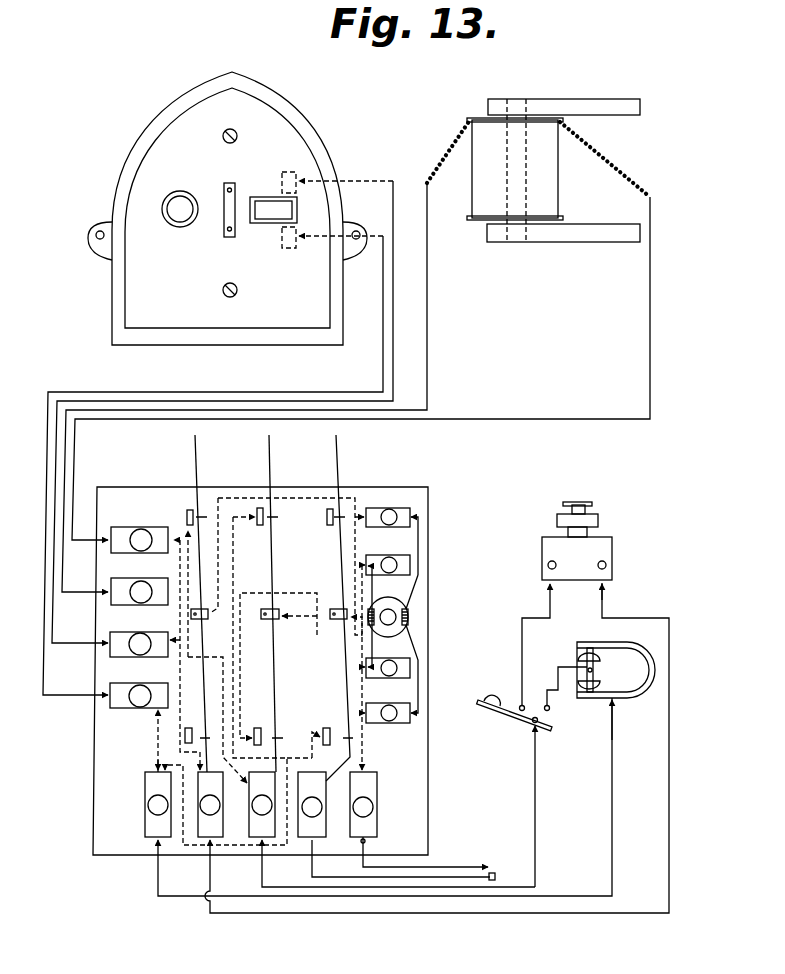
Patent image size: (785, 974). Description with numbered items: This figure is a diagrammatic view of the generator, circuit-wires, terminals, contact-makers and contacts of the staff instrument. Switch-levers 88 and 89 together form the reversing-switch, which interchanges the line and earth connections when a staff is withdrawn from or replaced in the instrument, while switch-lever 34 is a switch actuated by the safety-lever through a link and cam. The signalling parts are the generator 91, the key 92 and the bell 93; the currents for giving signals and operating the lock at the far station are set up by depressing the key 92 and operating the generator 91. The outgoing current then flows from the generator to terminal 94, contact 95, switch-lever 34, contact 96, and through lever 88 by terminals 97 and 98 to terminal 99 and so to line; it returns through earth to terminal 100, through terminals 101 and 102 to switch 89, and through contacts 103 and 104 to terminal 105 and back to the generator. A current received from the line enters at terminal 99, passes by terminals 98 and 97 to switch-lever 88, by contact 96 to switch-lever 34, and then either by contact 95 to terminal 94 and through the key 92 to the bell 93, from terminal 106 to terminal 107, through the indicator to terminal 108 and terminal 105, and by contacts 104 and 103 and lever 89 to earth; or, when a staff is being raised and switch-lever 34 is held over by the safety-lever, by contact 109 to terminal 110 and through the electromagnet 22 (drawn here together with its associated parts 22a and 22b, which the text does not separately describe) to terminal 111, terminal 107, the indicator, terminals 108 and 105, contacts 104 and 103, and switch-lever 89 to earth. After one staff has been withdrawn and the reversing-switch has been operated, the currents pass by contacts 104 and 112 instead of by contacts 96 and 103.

The electromagnet 22 is at (478, 117).
The upper core bar 22a is at (628, 105).
The lower core bar 22b is at (633, 242).
The switch 34 is at (197, 463).
The switch-lever 88 is at (340, 463).
The switch-lever 89 is at (271, 463).
The generator 91 is at (600, 676).
The key 92 is at (500, 690).
The bell 93 is at (577, 541).
The terminal 94 is at (262, 804).
The contact 95 is at (186, 514).
The contact 96 is at (315, 520).
The terminal 97 is at (408, 508).
The terminal 98 is at (404, 703).
The terminal 99 is at (363, 804).
The terminal 100 is at (312, 804).
The terminal 101 is at (406, 658).
The terminal 102 is at (406, 555).
The contact 103 is at (254, 526).
The contact 104 is at (316, 735).
The terminal 105 is at (158, 804).
The terminal 106 is at (211, 804).
The terminal 107 is at (156, 632).
The terminal 108 is at (156, 683).
The contact 109 is at (193, 728).
The terminal 110 is at (156, 527).
The terminal 111 is at (156, 578).
The contact 112 is at (257, 729).